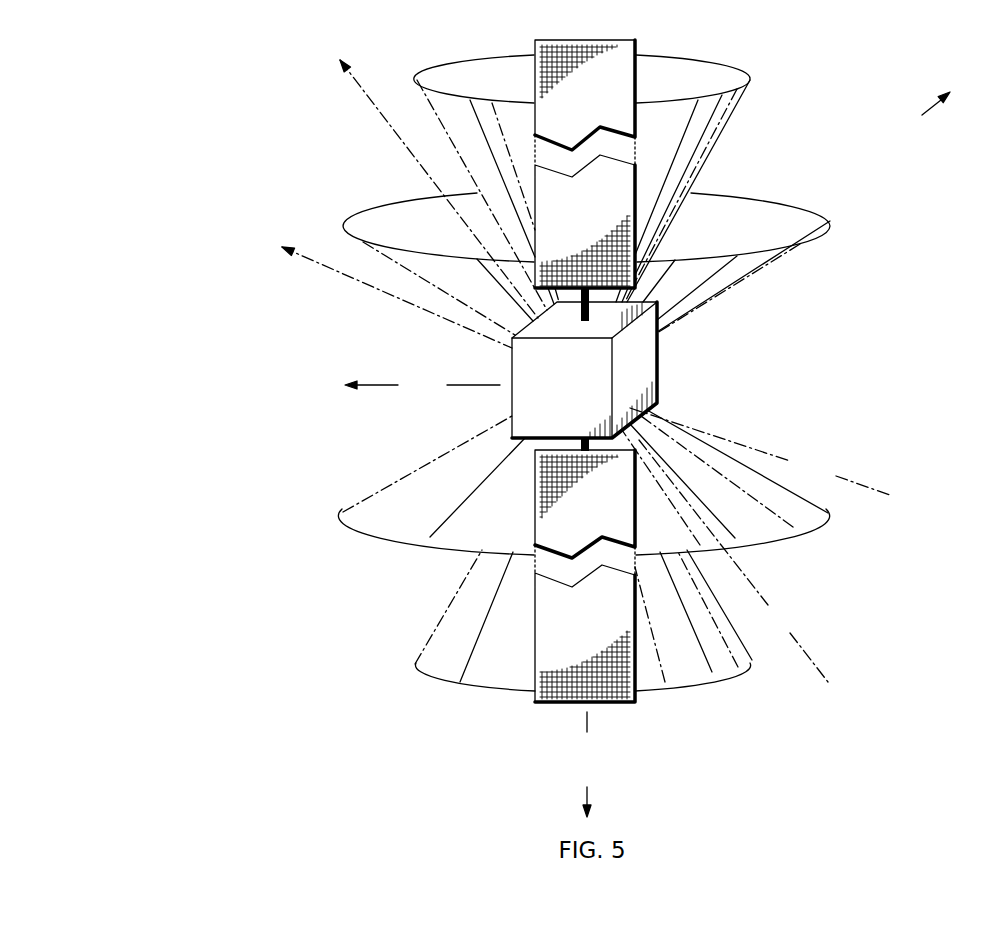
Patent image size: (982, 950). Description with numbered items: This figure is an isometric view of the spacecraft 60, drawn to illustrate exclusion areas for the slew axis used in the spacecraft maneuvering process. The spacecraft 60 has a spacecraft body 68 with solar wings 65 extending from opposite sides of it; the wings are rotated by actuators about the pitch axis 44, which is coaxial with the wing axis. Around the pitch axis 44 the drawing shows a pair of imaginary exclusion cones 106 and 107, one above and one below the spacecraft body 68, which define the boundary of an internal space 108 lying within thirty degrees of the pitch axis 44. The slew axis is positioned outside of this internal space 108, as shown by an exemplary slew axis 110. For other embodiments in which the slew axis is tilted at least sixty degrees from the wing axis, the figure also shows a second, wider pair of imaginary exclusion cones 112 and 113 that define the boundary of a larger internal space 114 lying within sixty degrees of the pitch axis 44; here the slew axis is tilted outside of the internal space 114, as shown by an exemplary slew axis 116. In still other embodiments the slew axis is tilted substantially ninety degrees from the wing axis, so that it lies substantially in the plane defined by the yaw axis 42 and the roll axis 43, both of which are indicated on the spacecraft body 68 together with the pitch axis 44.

The spacecraft 60 is at (310, 333).
The solar wings 65 is at (535, 48).
The spacecraft body 68 is at (662, 372).
The internal space 108 is at (693, 85).
The imaginary exclusion cone 106 is at (718, 142).
The internal space 114 is at (785, 233).
The imaginary exclusion cone 112 is at (757, 275).
The imaginary exclusion cone 113 is at (828, 508).
The imaginary exclusion cone 107 is at (752, 657).
The exemplary slew axis 110 is at (584, 371).
The exemplary slew axis 116 is at (586, 371).
The yaw axis 42 is at (422, 385).
The roll axis 43 is at (833, 187).
The pitch axis 44 is at (588, 764).